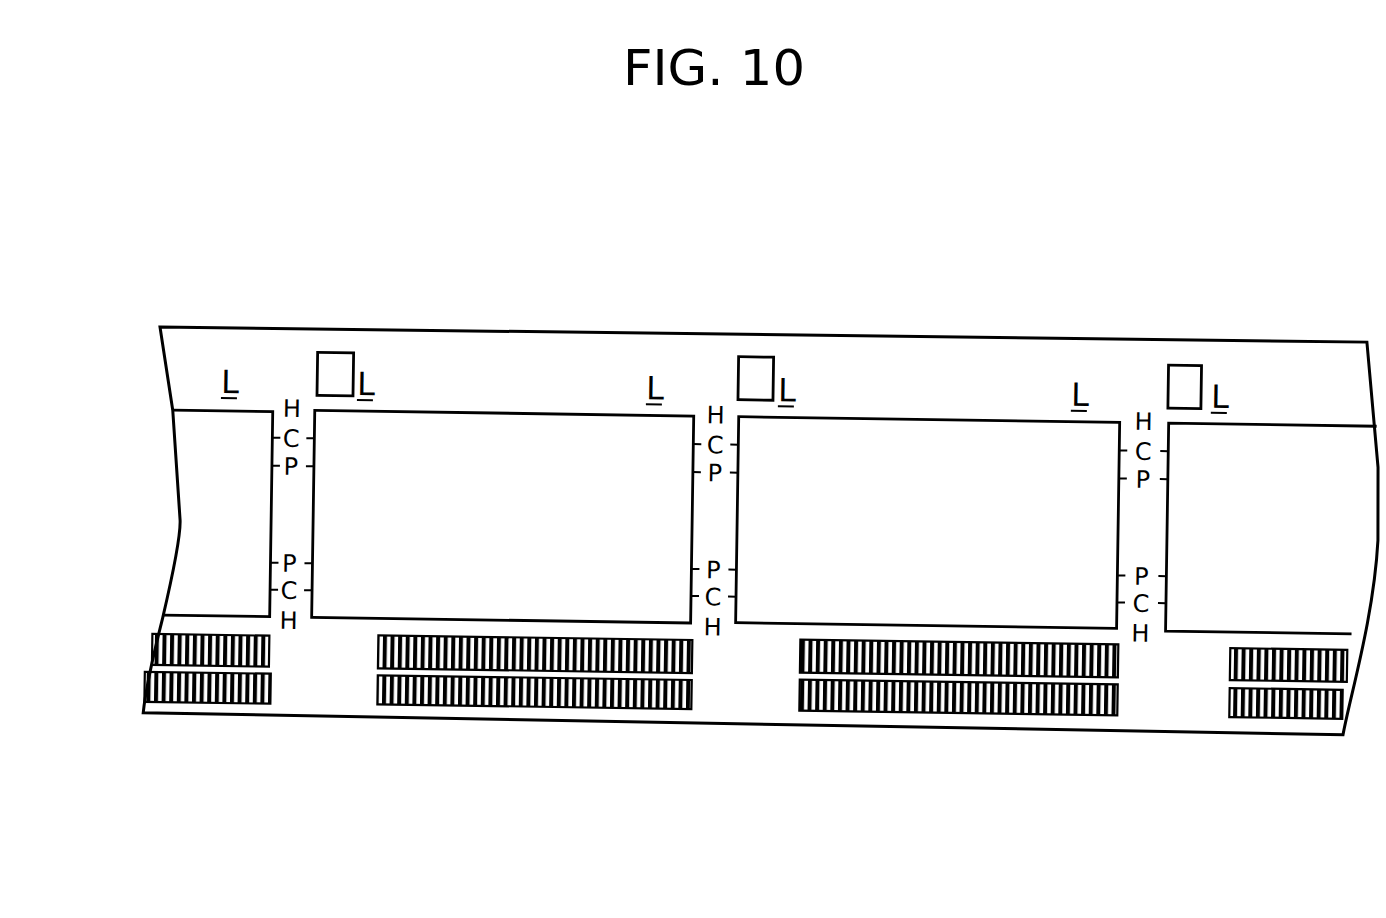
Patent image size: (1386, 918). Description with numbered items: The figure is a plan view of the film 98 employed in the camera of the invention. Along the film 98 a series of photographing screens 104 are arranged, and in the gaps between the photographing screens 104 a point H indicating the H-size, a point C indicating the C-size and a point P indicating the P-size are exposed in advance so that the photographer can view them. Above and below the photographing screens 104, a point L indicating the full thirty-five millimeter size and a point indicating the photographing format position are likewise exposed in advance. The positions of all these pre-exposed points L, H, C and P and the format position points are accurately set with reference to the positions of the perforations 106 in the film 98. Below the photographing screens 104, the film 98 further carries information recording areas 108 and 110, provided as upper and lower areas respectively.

The film 98 is at (940, 323).
The photographing screens 104 is at (770, 521).
The perforations 106 is at (318, 369).
The information recording area 108 is at (805, 647).
The information recording area 110 is at (805, 680).